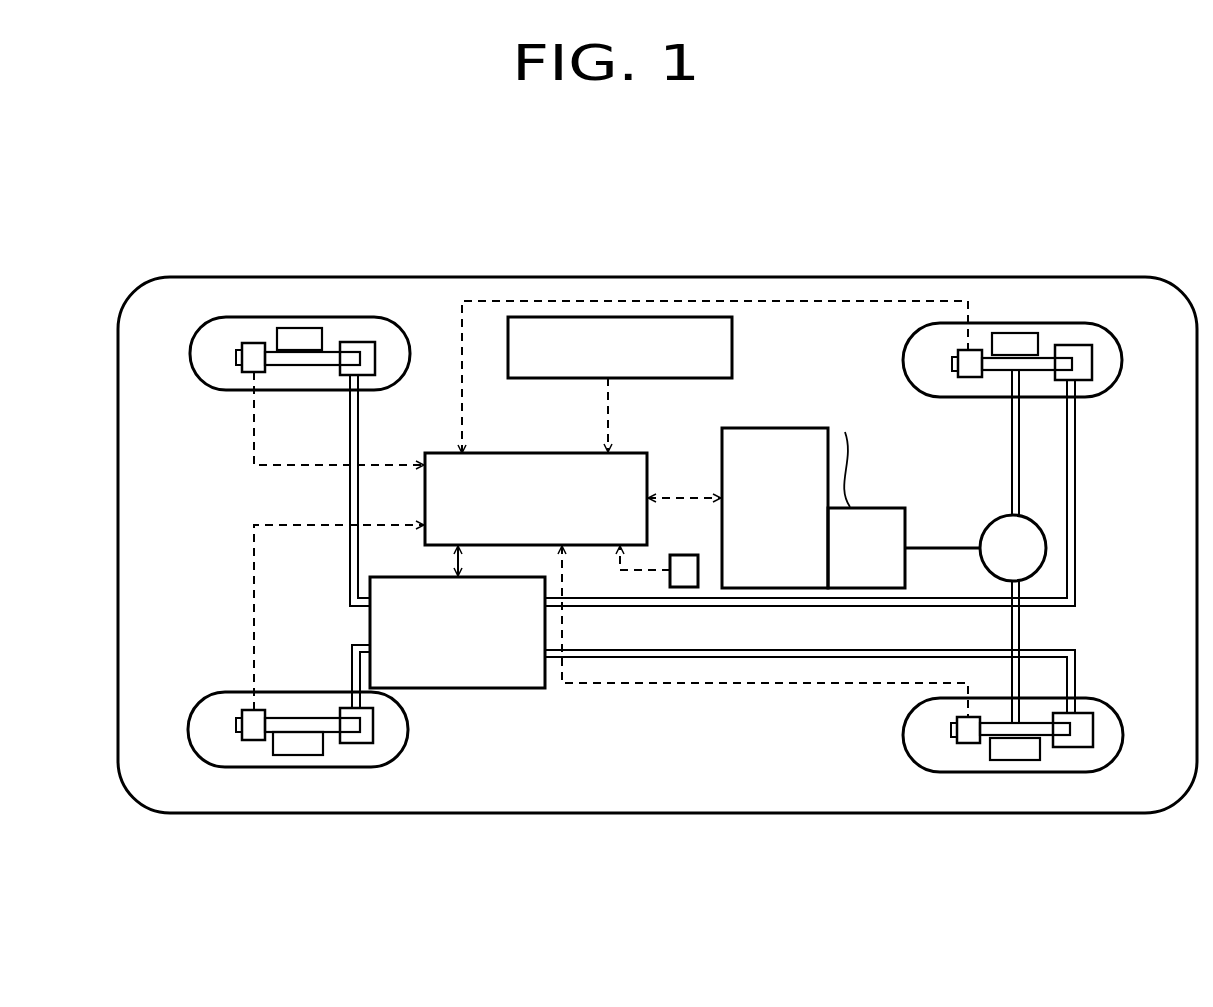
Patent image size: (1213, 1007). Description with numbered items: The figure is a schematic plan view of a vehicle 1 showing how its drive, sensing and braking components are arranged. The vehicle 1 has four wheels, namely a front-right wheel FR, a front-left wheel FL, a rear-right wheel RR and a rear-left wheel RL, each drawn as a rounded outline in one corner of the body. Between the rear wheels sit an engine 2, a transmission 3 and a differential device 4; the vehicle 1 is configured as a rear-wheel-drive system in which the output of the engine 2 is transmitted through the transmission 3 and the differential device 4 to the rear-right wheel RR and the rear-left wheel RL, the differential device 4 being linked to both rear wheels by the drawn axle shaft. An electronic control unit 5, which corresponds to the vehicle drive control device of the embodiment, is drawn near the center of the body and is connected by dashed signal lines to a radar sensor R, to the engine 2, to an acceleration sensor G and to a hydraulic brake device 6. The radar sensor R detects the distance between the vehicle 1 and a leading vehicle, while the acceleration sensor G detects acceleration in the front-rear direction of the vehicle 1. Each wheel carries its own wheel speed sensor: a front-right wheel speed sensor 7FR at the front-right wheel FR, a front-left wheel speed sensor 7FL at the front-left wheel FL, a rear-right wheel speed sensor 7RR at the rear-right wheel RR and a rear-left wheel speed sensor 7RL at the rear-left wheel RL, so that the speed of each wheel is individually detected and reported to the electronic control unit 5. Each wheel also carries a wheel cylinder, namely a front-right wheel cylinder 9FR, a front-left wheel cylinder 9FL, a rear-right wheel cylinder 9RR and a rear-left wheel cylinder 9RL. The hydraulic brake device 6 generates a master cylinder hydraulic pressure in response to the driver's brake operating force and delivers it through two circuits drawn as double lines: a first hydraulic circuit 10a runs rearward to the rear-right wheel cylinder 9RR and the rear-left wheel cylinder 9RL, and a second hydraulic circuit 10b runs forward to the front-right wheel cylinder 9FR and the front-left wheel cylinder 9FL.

The vehicle 1 is at (148, 272).
The engine 2 is at (768, 428).
The transmission 3 is at (860, 508).
The differential device 4 is at (1002, 530).
The electronic control unit 5 is at (647, 453).
The hydraulic brake device 6 is at (483, 690).
The front-right wheel speed sensor 7FR is at (255, 343).
The rear-right wheel speed sensor 7RR is at (960, 352).
The front-left wheel speed sensor 7FL is at (255, 742).
The rear-left wheel speed sensor 7RL is at (967, 745).
The front-right wheel cylinder 9FR is at (365, 342).
The rear-right wheel cylinder 9RR is at (1083, 345).
The front-left wheel cylinder 9FL is at (366, 744).
The rear-left wheel cylinder 9RL is at (1075, 748).
The first hydraulic circuit 10a is at (745, 657).
The second hydraulic circuit 10b is at (354, 658).
The acceleration sensor G is at (681, 580).
The radar sensor R is at (610, 317).
The front-right wheel FR is at (328, 317).
The rear-right wheel RR is at (1088, 398).
The front-left wheel FL is at (305, 767).
The rear-left wheel RL is at (1112, 722).